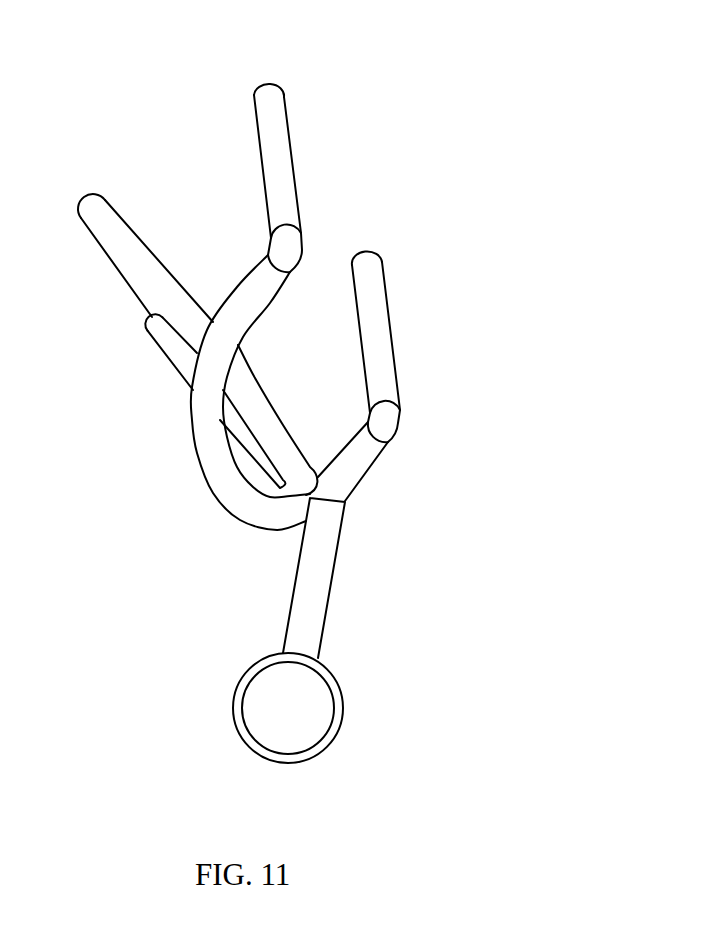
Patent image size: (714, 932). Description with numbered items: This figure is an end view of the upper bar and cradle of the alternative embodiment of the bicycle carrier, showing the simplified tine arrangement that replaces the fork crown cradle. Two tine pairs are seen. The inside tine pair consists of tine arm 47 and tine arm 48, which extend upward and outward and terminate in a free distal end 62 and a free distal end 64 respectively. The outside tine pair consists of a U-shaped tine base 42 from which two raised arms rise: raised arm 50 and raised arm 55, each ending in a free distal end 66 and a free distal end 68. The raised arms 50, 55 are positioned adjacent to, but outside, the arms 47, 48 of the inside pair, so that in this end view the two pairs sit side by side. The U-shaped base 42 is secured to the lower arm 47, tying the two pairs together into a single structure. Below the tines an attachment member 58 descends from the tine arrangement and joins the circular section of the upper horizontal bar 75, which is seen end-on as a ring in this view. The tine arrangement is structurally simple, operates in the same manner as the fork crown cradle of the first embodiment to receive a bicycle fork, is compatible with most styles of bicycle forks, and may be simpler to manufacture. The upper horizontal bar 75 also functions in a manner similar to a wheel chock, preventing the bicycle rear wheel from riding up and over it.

The tine base 42 is at (228, 492).
The tine arm 47 is at (183, 357).
The tine arm 48 is at (142, 268).
The raised arm 50 is at (277, 158).
The raised arm 55 is at (374, 330).
The attachment member 58 is at (322, 588).
The free distal end 62 is at (157, 317).
The free distal end 64 is at (92, 202).
The free distal end 66 is at (268, 88).
The free distal end 68 is at (370, 258).
The upper horizontal bar 75 is at (340, 710).